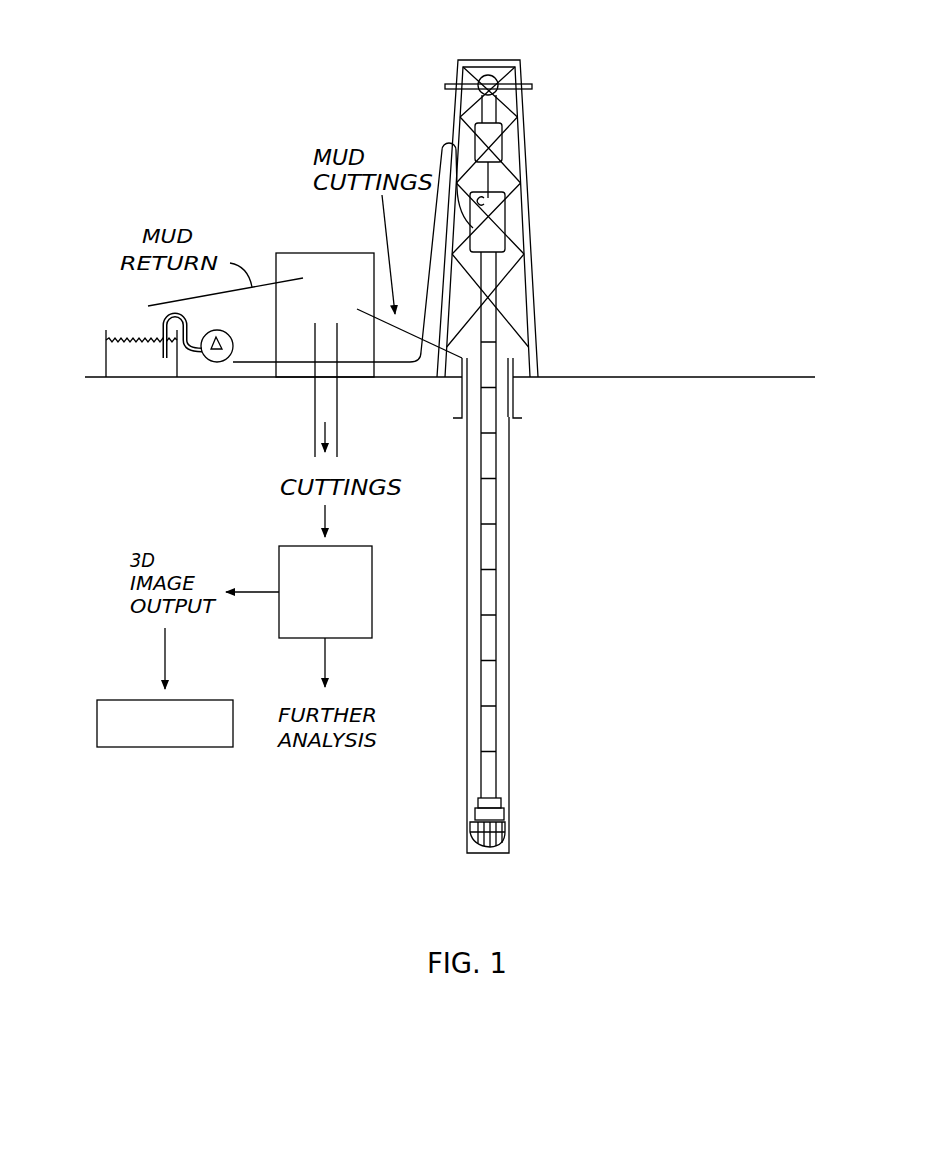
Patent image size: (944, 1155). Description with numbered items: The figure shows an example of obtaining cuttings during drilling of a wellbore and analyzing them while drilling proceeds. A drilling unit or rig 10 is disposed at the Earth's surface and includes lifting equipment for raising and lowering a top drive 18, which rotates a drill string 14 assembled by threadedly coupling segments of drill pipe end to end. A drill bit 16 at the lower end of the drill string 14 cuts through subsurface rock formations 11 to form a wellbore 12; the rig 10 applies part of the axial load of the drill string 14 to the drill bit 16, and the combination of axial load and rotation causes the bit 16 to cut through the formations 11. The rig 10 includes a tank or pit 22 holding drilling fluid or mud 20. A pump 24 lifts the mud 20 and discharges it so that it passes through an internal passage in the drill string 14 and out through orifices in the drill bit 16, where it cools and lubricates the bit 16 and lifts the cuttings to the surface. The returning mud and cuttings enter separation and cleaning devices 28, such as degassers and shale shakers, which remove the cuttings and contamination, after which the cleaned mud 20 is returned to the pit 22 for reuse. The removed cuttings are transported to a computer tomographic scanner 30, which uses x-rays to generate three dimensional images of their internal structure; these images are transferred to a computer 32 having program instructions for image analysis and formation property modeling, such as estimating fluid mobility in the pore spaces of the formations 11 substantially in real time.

The drilling unit or rig 10 is at (525, 152).
The subsurface rock formations 11 is at (677, 548).
The wellbore 12 is at (470, 768).
The drill string 14 is at (490, 423).
The drill bit 16 is at (510, 832).
The top drive 18 is at (490, 238).
The drilling fluid (mud) 20 is at (132, 352).
The tank or pit 22 is at (106, 354).
The pump 24 is at (228, 335).
The separation and cleaning devices 28 is at (320, 262).
The computer tomographic (CT) scanner 30 is at (293, 639).
The computer 32 is at (110, 748).